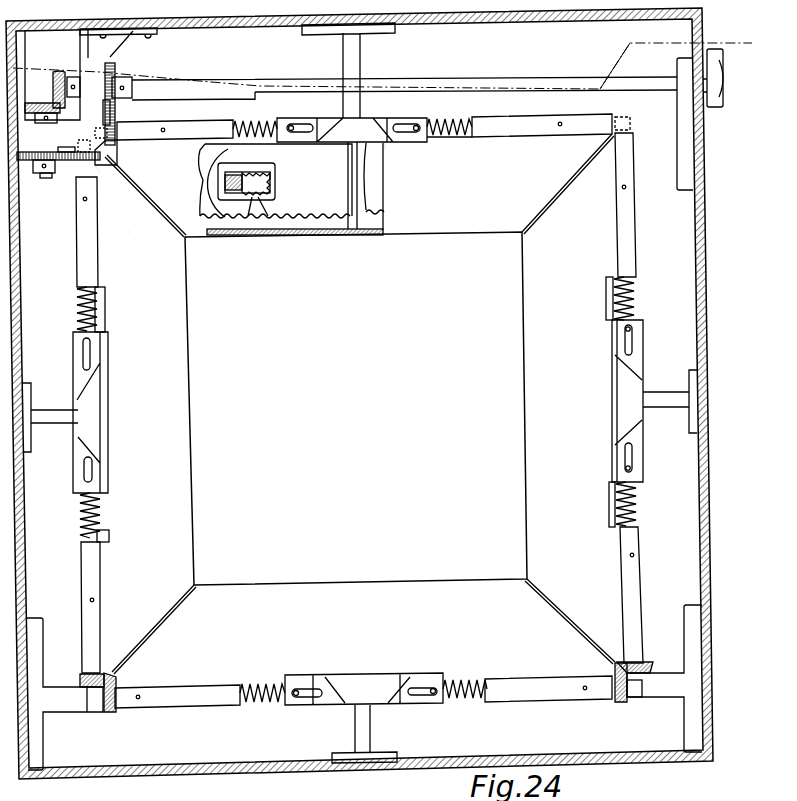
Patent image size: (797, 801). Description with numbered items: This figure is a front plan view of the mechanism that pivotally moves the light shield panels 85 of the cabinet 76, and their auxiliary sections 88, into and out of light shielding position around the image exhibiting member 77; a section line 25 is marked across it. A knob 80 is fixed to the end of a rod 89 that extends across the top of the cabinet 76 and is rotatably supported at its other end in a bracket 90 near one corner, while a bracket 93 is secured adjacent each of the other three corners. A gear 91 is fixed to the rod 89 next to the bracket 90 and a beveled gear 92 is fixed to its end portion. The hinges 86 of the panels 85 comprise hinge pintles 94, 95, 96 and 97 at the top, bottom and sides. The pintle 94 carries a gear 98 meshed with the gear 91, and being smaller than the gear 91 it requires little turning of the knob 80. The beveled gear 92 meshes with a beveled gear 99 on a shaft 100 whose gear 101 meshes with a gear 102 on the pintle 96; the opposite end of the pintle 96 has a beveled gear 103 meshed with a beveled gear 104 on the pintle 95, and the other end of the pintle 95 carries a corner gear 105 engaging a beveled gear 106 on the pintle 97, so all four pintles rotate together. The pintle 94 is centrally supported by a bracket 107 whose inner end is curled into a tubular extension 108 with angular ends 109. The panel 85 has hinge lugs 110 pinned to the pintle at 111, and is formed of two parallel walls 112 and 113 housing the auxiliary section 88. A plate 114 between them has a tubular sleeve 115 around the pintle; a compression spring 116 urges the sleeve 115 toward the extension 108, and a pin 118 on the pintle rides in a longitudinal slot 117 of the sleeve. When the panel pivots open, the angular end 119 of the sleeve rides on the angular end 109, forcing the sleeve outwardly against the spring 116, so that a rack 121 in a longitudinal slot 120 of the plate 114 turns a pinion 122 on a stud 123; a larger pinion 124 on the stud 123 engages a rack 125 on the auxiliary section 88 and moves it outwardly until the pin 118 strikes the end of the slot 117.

The section line 25 is at (30, 80).
The cabinet 76 is at (707, 267).
The image exhibiting member 77 is at (372, 415).
The knob 80 is at (720, 106).
The panels 85 is at (170, 462).
The hinges 86 is at (75, 246).
The auxiliary section 88 is at (215, 237).
The rod 89 is at (478, 78).
The bracket 90 is at (118, 43).
The gear 91 is at (113, 68).
The beveled gear 92 is at (62, 77).
The bracket 93 is at (688, 162).
The hinge pintle 94 is at (445, 137).
The hinge pintle 95 is at (465, 700).
The hinge pintle 96 is at (80, 513).
The hinge pintle 97 is at (635, 289).
The gear 98 is at (118, 153).
The beveled gear 99 is at (42, 101).
The shaft 100 is at (40, 180).
The gear 101 is at (47, 153).
The gear 102 is at (97, 165).
The beveled gear 103 is at (82, 677).
The beveled gear 104 is at (108, 713).
The bevel gear 105 is at (623, 703).
The beveled gear 106 is at (643, 677).
The bracket 107 is at (350, 42).
The tubular extension 108 is at (337, 133).
The angular end 109 is at (340, 115).
The hinge lugs 110 is at (203, 125).
The pin 111 is at (163, 128).
The wall 112 is at (198, 198).
The wall 113 is at (173, 203).
The plate 114 is at (283, 180).
The tubular sleeve 115 is at (318, 117).
The compression spring 116 is at (248, 127).
The longitudinal slot 117 is at (308, 123).
The pin 118 is at (277, 123).
The angular end 119 is at (290, 162).
The longitudinal slot 120 is at (279, 228).
The rack 121 is at (255, 220).
The pinion 122 is at (223, 182).
The stud 123 is at (233, 183).
The pinion 124 is at (144, 239).
The rack 125 is at (320, 232).